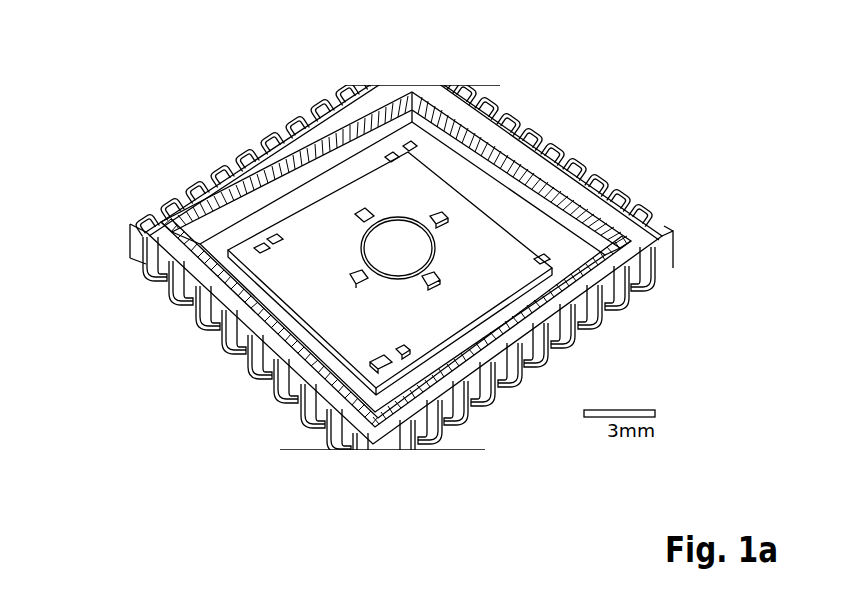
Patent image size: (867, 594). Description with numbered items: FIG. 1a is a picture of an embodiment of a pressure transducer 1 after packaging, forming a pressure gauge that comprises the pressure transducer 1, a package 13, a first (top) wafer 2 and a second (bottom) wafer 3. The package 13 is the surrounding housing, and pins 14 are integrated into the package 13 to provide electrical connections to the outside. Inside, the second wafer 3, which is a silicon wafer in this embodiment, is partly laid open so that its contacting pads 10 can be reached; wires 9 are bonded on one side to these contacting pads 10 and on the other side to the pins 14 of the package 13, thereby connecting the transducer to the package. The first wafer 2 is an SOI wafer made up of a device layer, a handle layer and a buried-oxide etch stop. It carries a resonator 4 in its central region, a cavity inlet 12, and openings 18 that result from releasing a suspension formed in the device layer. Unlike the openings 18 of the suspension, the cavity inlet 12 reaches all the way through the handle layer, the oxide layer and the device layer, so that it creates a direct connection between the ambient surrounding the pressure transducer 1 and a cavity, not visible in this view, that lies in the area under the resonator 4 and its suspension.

The pressure transducer 1 is at (267, 293).
The first wafer 2 is at (457, 195).
The second wafer 3 is at (483, 313).
The resonator 4 is at (385, 245).
The wires 9 is at (402, 370).
The contacting pads 10 is at (380, 363).
The cavity inlet 12 is at (440, 240).
The package 13 is at (468, 360).
The pins 14 is at (587, 255).
The openings 18 is at (423, 277).